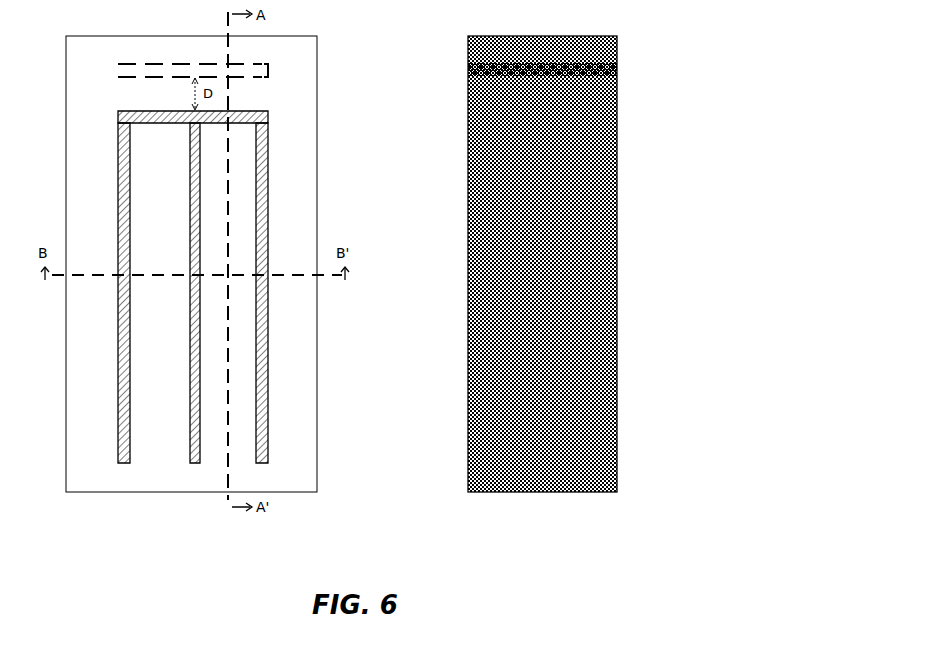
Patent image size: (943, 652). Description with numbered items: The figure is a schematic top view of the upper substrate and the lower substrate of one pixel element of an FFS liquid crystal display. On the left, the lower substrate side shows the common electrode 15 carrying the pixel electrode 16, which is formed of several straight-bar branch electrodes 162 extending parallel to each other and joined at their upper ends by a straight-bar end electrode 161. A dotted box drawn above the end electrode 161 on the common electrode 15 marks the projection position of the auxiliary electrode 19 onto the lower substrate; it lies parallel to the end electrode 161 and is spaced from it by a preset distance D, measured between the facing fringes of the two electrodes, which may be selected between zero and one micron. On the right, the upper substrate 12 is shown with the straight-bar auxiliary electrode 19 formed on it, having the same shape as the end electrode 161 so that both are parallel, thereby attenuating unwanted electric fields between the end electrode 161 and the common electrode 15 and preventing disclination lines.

The upper substrate 12 is at (576, 38).
The common electrode 15 is at (282, 46).
The pixel electrode 16 is at (258, 270).
The end electrode 161 is at (265, 112).
The branch electrodes 162 is at (217, 293).
The auxiliary electrode 19 is at (140, 66).